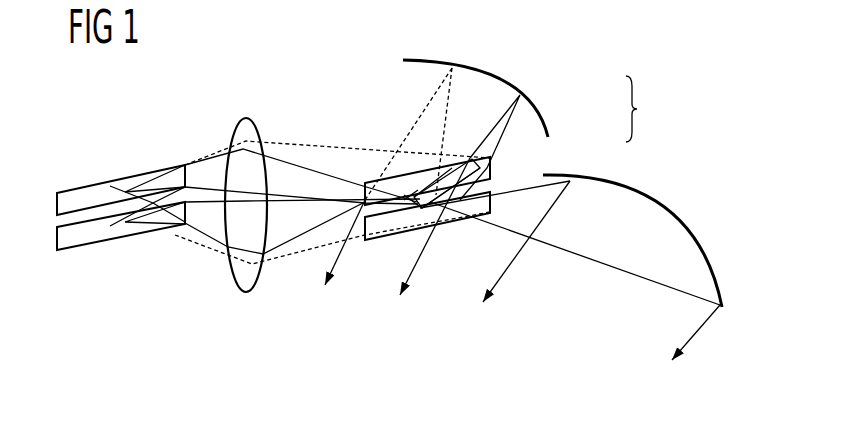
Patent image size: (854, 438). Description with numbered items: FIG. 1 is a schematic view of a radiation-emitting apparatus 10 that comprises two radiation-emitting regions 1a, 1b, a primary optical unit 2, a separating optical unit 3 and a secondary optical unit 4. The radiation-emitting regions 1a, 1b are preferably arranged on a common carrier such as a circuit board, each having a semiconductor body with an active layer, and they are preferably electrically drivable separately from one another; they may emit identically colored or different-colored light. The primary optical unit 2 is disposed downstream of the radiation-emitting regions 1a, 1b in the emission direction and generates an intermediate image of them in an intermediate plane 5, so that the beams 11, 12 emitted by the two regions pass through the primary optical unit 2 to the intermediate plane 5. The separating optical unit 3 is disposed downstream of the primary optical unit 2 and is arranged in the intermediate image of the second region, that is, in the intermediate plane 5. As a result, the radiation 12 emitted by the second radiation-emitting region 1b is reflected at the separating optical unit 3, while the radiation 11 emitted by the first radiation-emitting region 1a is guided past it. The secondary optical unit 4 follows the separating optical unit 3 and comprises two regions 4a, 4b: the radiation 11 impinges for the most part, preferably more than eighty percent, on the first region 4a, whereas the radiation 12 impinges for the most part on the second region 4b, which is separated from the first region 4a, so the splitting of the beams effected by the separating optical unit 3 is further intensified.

The radiation-emitting apparatus 10 is at (605, 53).
The first radiation-emitting region 1a is at (91, 196).
The second radiation-emitting region 1b is at (91, 232).
The radiation emitted by the first radiation-emitting region 11 is at (197, 162).
The radiation emitted by the second radiation-emitting region 12 is at (195, 248).
The primary optical unit 2 is at (250, 128).
The separating optical unit 3 is at (443, 163).
The secondary optical unit 4 is at (639, 109).
The first region of the secondary optical unit 4a is at (597, 183).
The second region of the secondary optical unit 4b is at (542, 118).
The intermediate plane 5 is at (388, 246).